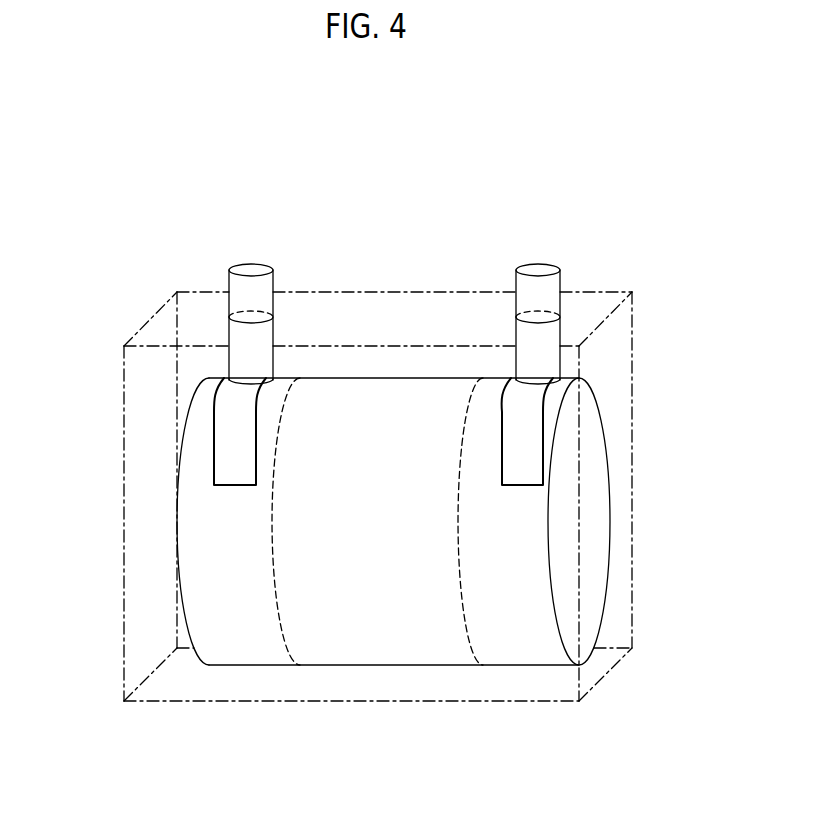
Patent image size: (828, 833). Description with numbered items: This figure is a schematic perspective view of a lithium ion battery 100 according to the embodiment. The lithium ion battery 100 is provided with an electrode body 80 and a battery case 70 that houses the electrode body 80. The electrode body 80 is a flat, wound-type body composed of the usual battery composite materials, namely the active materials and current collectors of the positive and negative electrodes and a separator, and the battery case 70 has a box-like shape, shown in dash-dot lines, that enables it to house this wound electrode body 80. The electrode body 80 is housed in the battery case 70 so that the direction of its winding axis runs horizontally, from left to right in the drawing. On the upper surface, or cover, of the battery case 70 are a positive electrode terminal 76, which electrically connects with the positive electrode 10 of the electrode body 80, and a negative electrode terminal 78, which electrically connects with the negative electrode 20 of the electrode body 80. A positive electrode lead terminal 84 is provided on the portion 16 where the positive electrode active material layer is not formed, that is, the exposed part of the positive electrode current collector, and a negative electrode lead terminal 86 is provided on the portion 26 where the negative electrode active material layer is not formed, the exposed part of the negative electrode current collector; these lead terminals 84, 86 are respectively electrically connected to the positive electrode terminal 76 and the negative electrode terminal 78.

The lithium ion battery 100 is at (625, 227).
The battery case 70 is at (122, 395).
The positive electrode 10 is at (556, 533).
The negative electrode 20 is at (171, 532).
The electrode body 80 is at (226, 673).
The portion where the negative electrode active material layer is not formed 26 is at (272, 665).
The portion where the positive electrode active material layer is not formed 16 is at (515, 665).
The negative electrode lead terminal 86 is at (227, 462).
The positive electrode lead terminal 84 is at (535, 447).
The negative electrode terminal 78 is at (251, 266).
The positive electrode terminal 76 is at (537, 266).